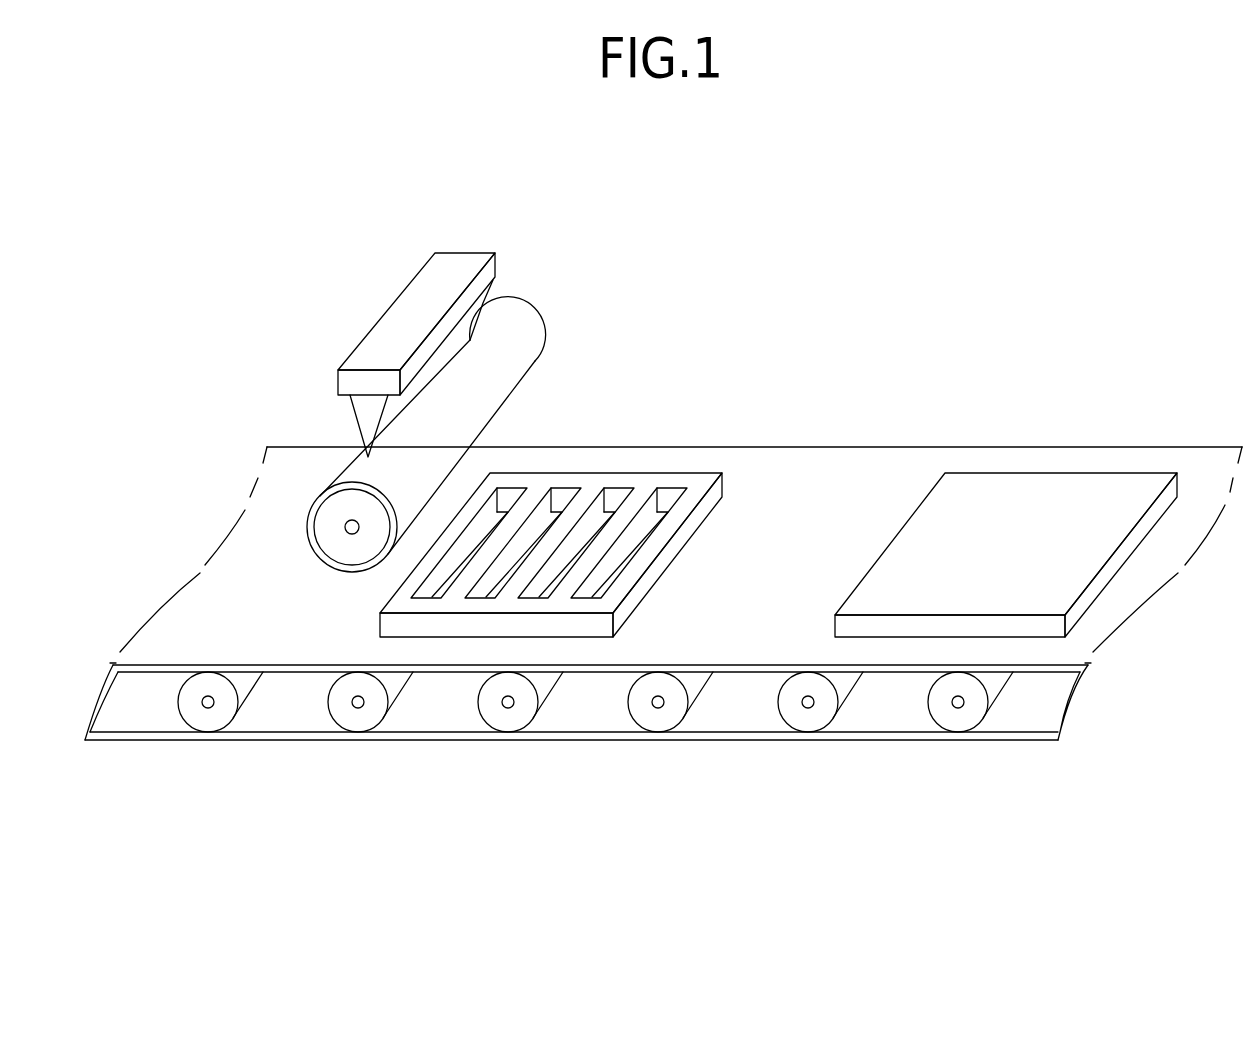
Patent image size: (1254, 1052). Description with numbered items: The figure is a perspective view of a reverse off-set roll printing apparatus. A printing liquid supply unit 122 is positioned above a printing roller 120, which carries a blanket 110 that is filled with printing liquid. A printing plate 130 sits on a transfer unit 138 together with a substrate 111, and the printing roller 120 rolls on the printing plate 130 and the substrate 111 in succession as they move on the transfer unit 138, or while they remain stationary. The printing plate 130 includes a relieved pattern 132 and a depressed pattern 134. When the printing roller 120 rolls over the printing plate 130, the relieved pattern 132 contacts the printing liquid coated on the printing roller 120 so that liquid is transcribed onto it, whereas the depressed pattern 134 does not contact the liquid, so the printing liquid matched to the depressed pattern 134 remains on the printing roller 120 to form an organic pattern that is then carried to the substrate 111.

The blanket 110 is at (518, 325).
The substrate 111 is at (1012, 488).
The printing roller 120 is at (338, 547).
The printing liquid supply unit 122 is at (462, 260).
The printing plate 130 is at (682, 480).
The relieved pattern 132 is at (585, 502).
The depressed pattern 134 is at (561, 498).
The transfer unit 138 is at (870, 470).